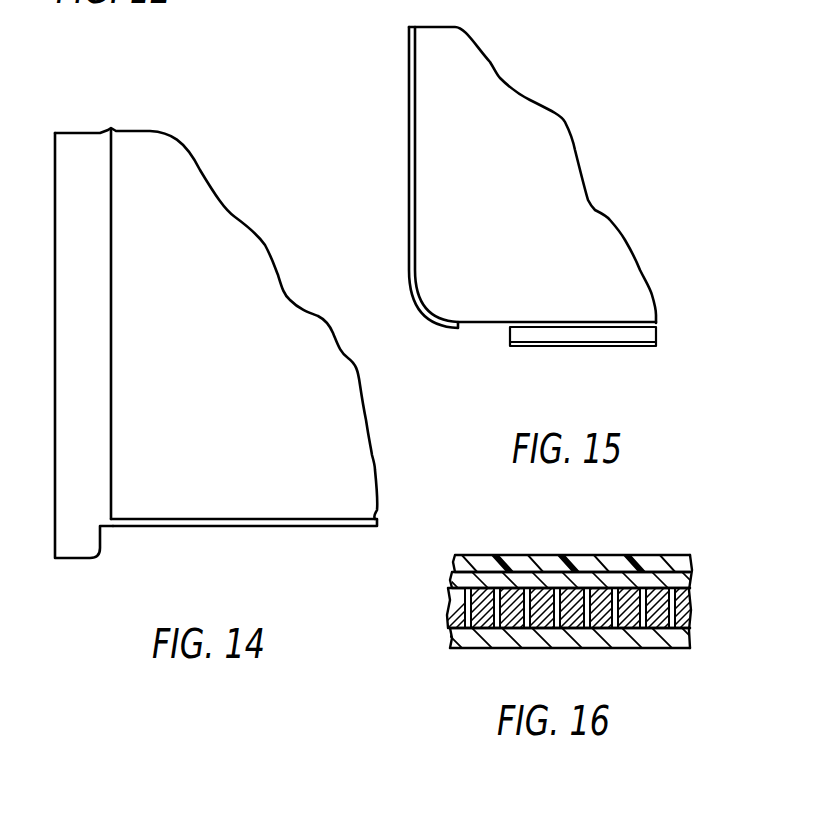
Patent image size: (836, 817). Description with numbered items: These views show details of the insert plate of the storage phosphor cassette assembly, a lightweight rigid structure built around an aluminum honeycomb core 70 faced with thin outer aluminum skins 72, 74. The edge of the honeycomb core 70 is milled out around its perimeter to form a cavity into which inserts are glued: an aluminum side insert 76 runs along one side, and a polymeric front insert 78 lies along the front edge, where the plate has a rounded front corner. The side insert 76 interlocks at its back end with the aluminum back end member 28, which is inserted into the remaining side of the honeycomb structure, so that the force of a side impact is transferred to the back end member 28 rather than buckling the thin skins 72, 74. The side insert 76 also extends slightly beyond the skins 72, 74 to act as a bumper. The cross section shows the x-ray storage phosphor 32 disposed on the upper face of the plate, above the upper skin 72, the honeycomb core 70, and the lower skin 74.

In FIG. 14, the back end member 28 is at (75, 560).
In FIG. 14, the side insert 76 is at (297, 527).
In FIG. 15, the side insert 76 is at (409, 108).
In FIG. 15, the front insert 78 is at (592, 333).
In FIG. 16, the x-ray storage phosphor 32 is at (675, 560).
In FIG. 16, the outer aluminum skin 72 is at (690, 582).
In FIG. 16, the honeycomb core 70 is at (690, 608).
In FIG. 16, the outer aluminum skin 74 is at (690, 637).